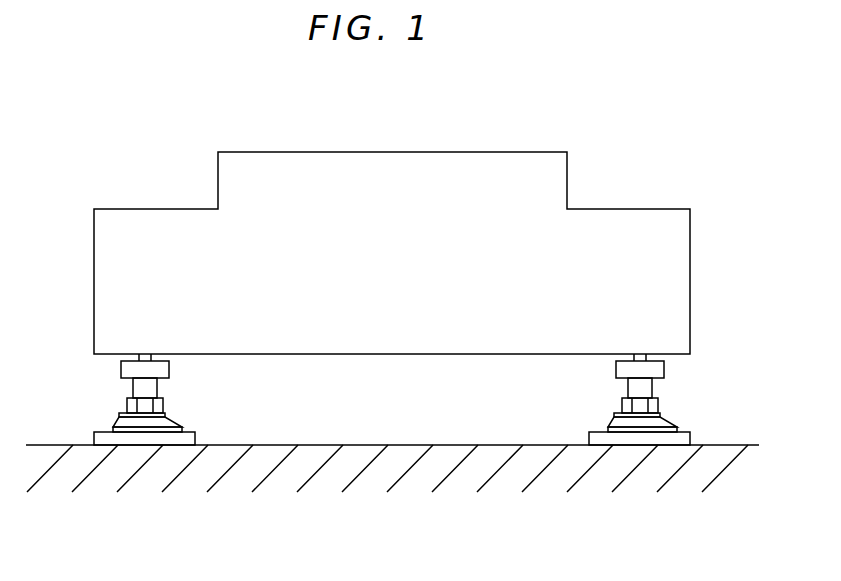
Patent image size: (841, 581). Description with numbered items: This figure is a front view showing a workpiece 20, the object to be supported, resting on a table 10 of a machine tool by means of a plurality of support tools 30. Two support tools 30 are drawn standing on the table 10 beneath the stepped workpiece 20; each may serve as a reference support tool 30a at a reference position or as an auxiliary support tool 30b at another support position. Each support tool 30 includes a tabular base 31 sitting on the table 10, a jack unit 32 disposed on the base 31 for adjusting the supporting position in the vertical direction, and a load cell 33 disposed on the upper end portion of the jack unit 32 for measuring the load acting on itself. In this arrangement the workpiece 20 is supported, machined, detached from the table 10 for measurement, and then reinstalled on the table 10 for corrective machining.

The table 10 is at (48, 445).
The workpiece 20 is at (218, 175).
The support tool 30 is at (423, 399).
The reference support tool 30a is at (268, 393).
The auxiliary support tool 30b is at (518, 393).
The tabular base 31 is at (195, 440).
The jack unit 32 is at (157, 390).
The load cell 33 is at (169, 366).